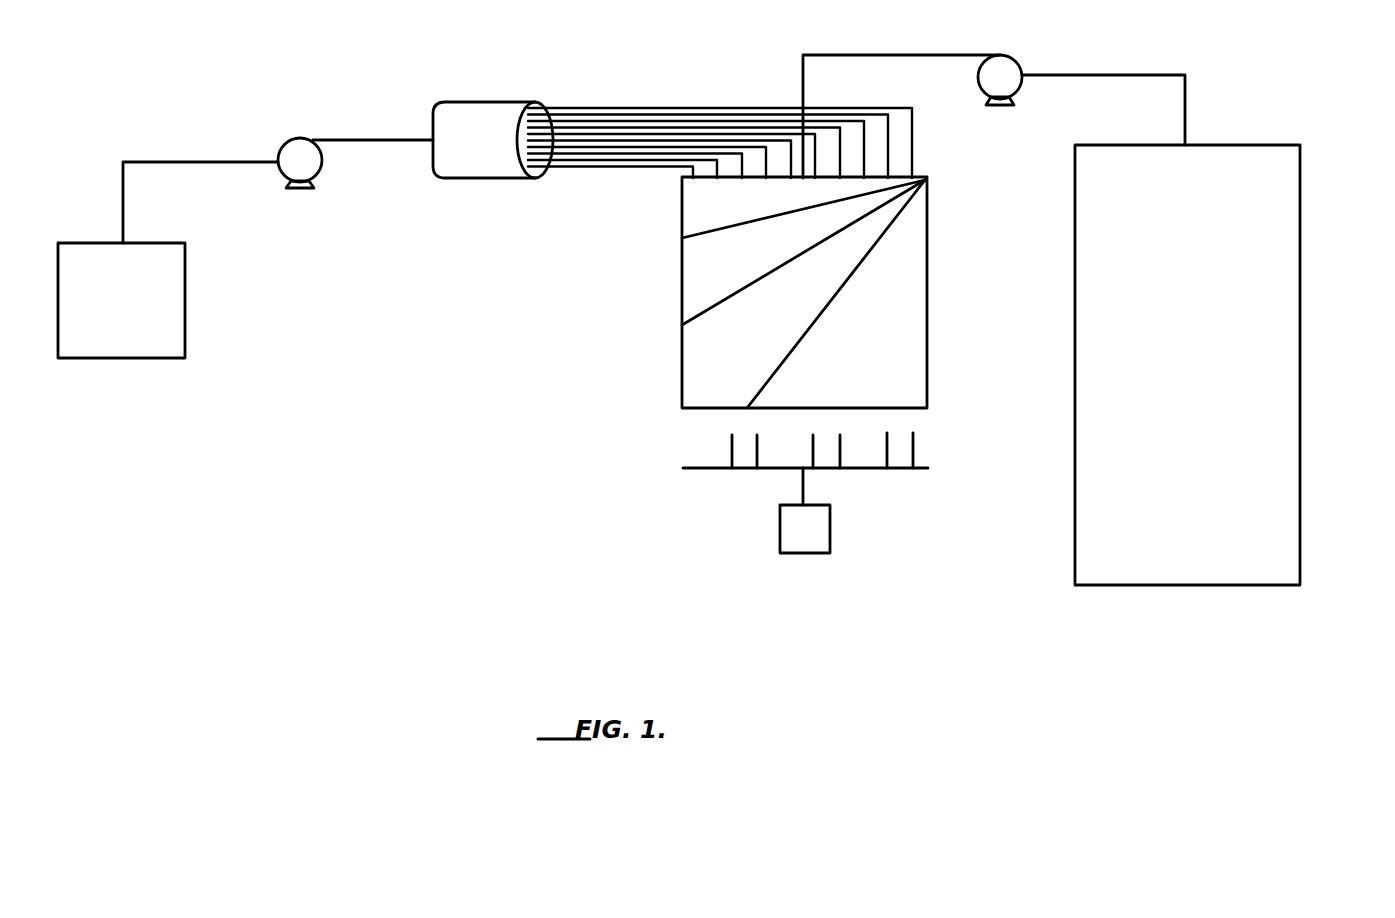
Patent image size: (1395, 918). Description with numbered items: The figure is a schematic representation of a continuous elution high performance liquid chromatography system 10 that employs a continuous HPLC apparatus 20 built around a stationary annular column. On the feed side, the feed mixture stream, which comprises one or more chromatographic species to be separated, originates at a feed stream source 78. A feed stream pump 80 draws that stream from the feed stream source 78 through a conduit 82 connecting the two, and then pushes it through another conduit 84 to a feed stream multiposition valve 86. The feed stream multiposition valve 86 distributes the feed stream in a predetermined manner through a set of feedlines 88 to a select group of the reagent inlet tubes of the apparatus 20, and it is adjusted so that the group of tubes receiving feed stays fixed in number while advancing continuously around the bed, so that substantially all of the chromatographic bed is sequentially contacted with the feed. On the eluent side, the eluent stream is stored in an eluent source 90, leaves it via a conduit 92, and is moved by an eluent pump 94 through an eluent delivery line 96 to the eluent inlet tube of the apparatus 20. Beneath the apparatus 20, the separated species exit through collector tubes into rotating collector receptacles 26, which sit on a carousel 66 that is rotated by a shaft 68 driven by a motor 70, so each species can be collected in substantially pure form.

The elution HPLC system 10 is at (410, 492).
The continuous HPLC apparatus 20 is at (682, 287).
The rotating collector receptacles 26 is at (913, 445).
The carousel 66 is at (689, 464).
The shaft 68 is at (803, 490).
The motor 70 is at (830, 527).
The feed stream source 78 is at (185, 300).
The feed stream pump 80 is at (282, 145).
The conduit 82 is at (158, 160).
The conduit 84 is at (388, 139).
The feed stream multiposition valve 86 is at (495, 100).
The feedlines 88 is at (682, 106).
The eluent source 90 is at (1300, 442).
The conduit 92 is at (1186, 118).
The eluent pump 94 is at (1015, 62).
The eluent delivery line 96 is at (905, 55).